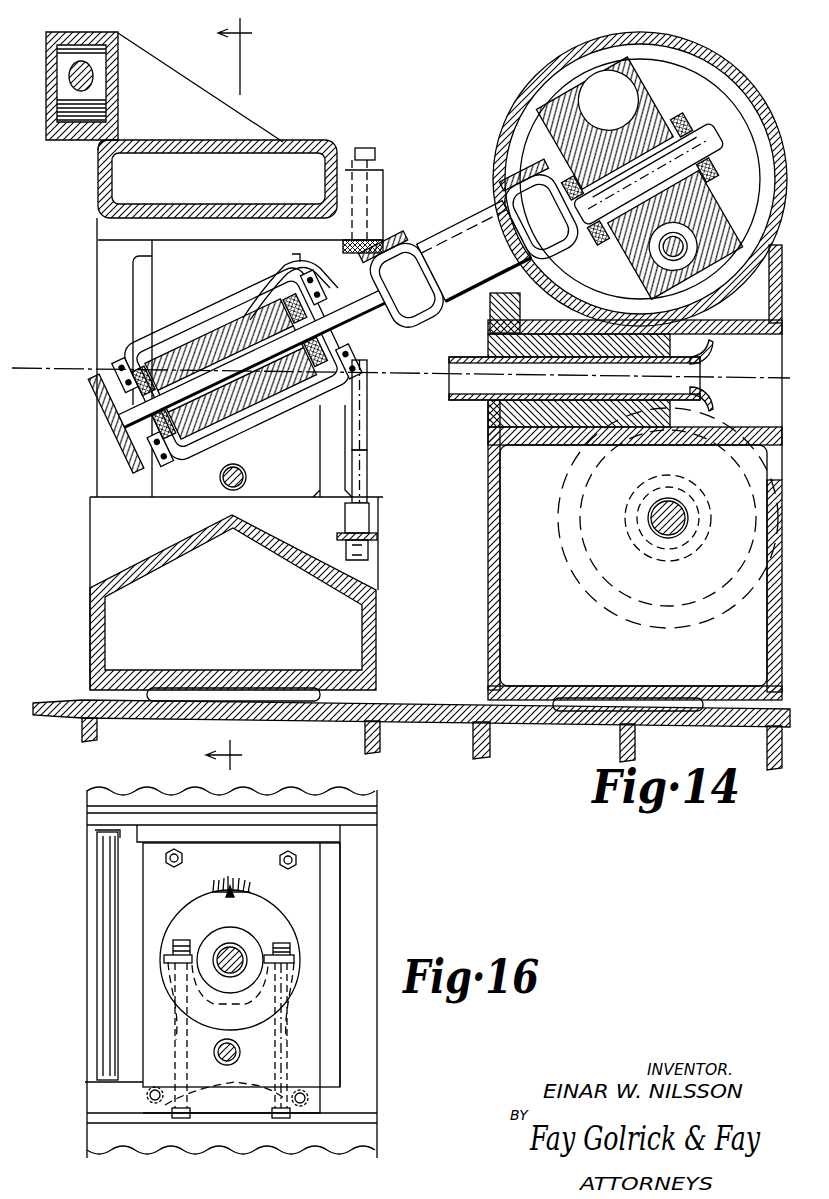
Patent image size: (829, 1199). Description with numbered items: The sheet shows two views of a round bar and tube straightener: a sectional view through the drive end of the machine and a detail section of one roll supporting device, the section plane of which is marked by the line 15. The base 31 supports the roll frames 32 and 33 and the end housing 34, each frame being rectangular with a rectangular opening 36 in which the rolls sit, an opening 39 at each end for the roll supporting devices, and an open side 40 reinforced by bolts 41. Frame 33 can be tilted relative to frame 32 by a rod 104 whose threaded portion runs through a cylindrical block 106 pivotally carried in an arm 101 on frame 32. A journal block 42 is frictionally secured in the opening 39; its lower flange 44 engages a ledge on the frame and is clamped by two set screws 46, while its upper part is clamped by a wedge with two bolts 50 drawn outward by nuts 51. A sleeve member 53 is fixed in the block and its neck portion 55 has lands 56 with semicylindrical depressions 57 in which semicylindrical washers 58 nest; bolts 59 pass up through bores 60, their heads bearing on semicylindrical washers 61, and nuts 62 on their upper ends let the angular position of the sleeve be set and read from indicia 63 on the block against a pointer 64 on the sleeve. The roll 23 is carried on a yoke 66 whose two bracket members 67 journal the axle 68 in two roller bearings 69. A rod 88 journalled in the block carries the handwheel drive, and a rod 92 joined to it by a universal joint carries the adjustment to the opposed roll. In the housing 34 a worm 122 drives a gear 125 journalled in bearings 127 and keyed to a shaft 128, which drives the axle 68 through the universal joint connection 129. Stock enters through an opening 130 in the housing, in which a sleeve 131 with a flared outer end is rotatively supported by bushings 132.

In FIG. 14, the section line 15- 15 is at (247, 392).
In FIG. 14, the roll 23 is at (213, 334).
In FIG. 14, the base 31 is at (416, 708).
In FIG. 14, the roll frame 32 is at (308, 141).
In FIG. 16, the roll frame 33 is at (355, 899).
In FIG. 14, the end housing 34 is at (527, 92).
In FIG. 14, the rectangular opening 36 is at (108, 538).
In FIG. 14, the opening 39 is at (122, 274).
In FIG. 16, the opening 39 is at (330, 871).
In FIG. 14, the open side 40 is at (340, 473).
In FIG. 16, the open side 40 is at (93, 832).
In FIG. 14, the bolt 41 is at (367, 412).
In FIG. 16, the bolt 41 is at (100, 946).
In FIG. 14, the journal block 42 is at (308, 457).
In FIG. 16, the journal block 42 is at (345, 916).
In FIG. 16, the flange 44 is at (220, 1108).
In FIG. 16, the set screw 46 is at (165, 1076).
In FIG. 16, the bolt 50 is at (280, 861).
In FIG. 16, the nut 51 is at (297, 860).
In FIG. 16, the sleeve member 53 is at (250, 906).
In FIG. 16, the neck portion 55 is at (244, 936).
In FIG. 16, the land 56 is at (165, 956).
In FIG. 16, the semicylindrical depression 57 is at (251, 995).
In FIG. 16, the semicylindrical washer 58 is at (292, 969).
In FIG. 16, the bolt 59 is at (185, 1053).
In FIG. 16, the bore 60 is at (183, 1041).
In FIG. 16, the semicylindrical washer 61 is at (200, 1099).
In FIG. 16, the nut 62 is at (273, 952).
In FIG. 16, the indicia 63 is at (214, 882).
In FIG. 16, the pointer 64 is at (223, 900).
In FIG. 14, the yoke 66 is at (270, 418).
In FIG. 14, the bracket member 67 is at (362, 245).
In FIG. 14, the axle 68 is at (272, 300).
In FIG. 14, the roller bearing 69 is at (114, 402).
In FIG. 16, the rod 88 is at (236, 1052).
In FIG. 14, the rod 92 is at (248, 474).
In FIG. 14, the arm 101 is at (101, 34).
In FIG. 14, the rod 104 is at (89, 68).
In FIG. 14, the cylindrical block 106 is at (46, 130).
In FIG. 14, the worm 122 is at (699, 238).
In FIG. 14, the gear 125 is at (628, 105).
In FIG. 14, the bearing 127 is at (660, 124).
In FIG. 14, the shaft 128 is at (589, 248).
In FIG. 14, the universal joint connection 129 is at (466, 241).
In FIG. 14, the opening 130 is at (764, 406).
In FIG. 14, the sleeve 131 is at (700, 378).
In FIG. 14, the bushing 132 is at (672, 350).